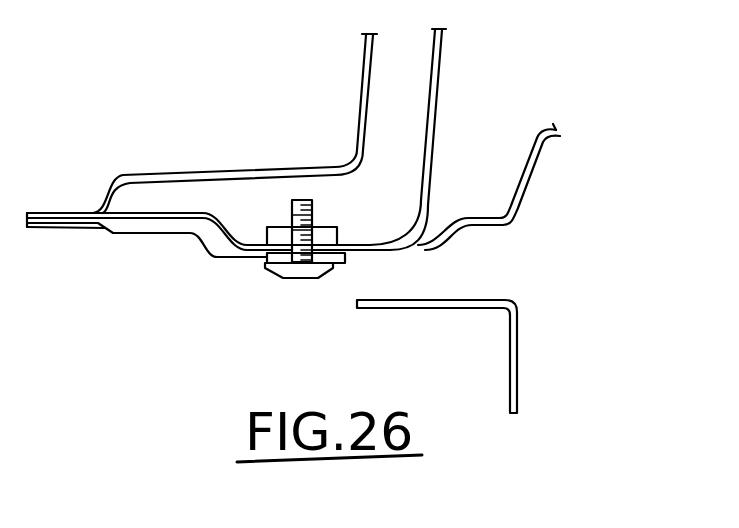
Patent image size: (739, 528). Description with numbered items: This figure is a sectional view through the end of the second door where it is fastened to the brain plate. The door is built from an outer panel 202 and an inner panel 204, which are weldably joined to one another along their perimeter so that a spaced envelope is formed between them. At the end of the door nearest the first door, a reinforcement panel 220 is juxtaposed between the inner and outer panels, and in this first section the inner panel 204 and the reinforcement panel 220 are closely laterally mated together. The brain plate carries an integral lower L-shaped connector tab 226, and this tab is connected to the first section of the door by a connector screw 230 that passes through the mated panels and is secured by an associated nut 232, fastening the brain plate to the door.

The outer panel 202 is at (361, 97).
The reinforcement panel 220 is at (436, 113).
The inner panel 204 is at (528, 219).
The connector screw 230 is at (313, 200).
The nut 232 is at (336, 227).
The lower L-shaped connector tab 226 is at (264, 264).